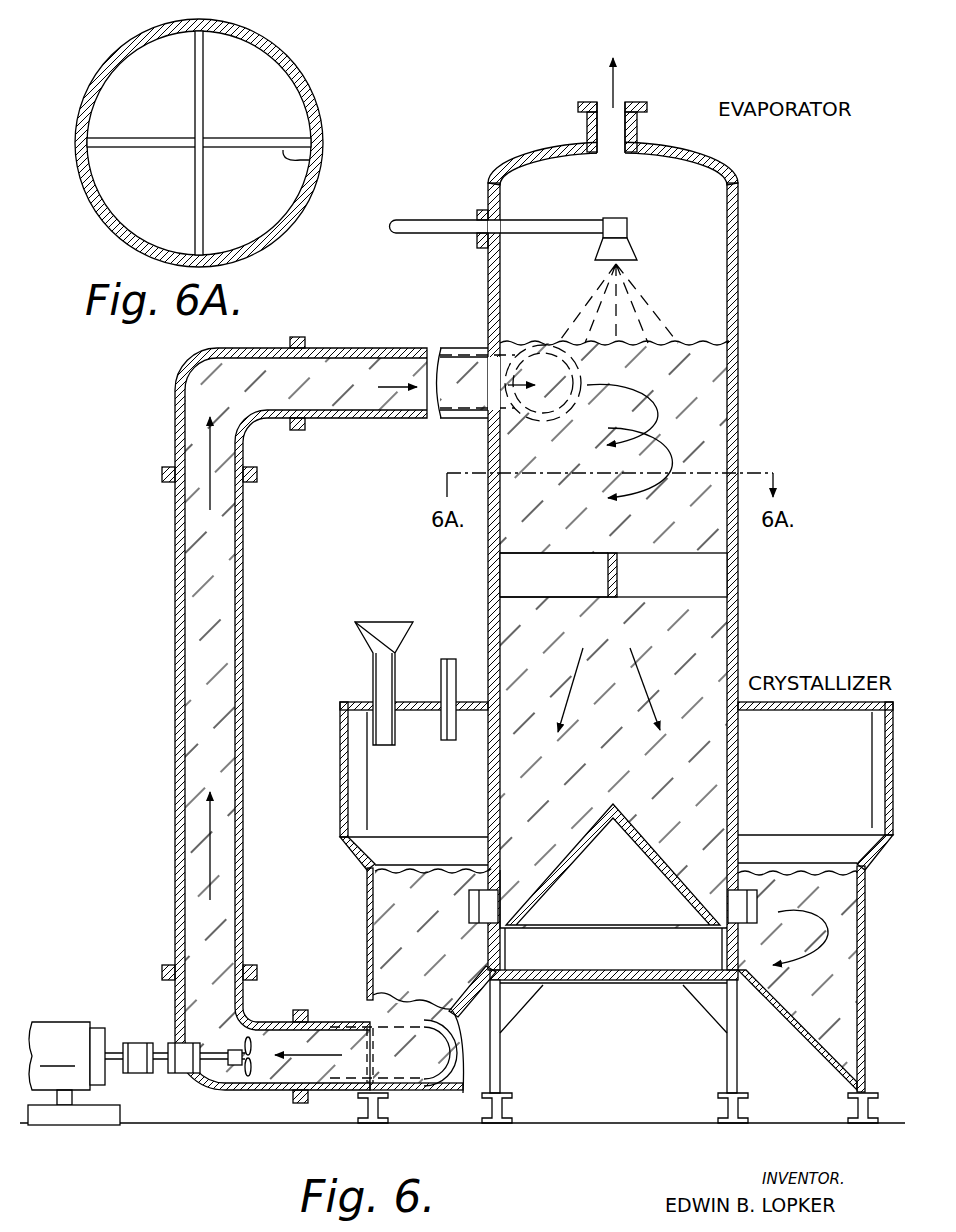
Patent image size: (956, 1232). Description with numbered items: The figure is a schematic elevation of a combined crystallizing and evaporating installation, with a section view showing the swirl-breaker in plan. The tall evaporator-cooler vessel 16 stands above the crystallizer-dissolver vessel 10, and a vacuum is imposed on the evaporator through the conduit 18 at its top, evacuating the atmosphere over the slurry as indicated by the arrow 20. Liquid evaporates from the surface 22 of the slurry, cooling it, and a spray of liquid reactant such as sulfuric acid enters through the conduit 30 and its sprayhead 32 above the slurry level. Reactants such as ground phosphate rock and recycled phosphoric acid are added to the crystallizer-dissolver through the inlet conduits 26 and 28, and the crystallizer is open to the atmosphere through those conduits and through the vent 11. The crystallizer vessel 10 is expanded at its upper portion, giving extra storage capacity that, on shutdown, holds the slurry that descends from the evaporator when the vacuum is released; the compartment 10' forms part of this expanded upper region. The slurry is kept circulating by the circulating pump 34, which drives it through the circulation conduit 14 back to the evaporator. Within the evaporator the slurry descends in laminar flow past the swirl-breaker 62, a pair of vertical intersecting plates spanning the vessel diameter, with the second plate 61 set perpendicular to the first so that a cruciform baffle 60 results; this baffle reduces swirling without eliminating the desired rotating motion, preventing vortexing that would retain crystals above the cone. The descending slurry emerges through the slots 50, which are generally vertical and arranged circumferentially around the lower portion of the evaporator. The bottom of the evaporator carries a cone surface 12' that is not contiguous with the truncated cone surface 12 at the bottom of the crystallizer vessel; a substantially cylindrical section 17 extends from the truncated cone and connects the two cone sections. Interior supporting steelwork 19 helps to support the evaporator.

In FIG. 6A, the crystallizer-dissolver vessel 10 is at (220, 143).
In FIG. 6, the crystallizer-dissolver vessel 10 is at (608, 978).
In FIG. 6, the feed compartment 10' is at (388, 786).
In FIG. 6, the vent 11 is at (826, 711).
In FIG. 6, the cone surface 12 is at (410, 1047).
In FIG. 6, the cone surface 12' is at (613, 864).
In FIG. 6, the circulation conduit 14 is at (386, 348).
In FIG. 6, the evaporator-cooler vessel 16 is at (740, 312).
In FIG. 6, the cylindrical section 17 is at (487, 953).
In FIG. 6, the conduit 18 is at (586, 128).
In FIG. 6, the interior supporting steelwork 19 is at (500, 1047).
In FIG. 6, the arrow 20 is at (613, 70).
In FIG. 6, the slurry surface 22 is at (548, 346).
In FIG. 6, the inlet conduit 26 is at (373, 672).
In FIG. 6, the inlet conduit 28 is at (457, 672).
In FIG. 6, the conduit 30 is at (440, 221).
In FIG. 6, the sprayhead 32 is at (628, 243).
In FIG. 6, the circulating pump 34 is at (53, 1022).
In FIG. 6, the slots 50 is at (500, 893).
In FIG. 6A, the baffle plate 60 is at (283, 150).
In FIG. 6, the baffle plate 60 is at (707, 578).
In FIG. 6A, the second plate 61 is at (205, 80).
In FIG. 6, the second plate 61 is at (619, 580).
In FIG. 6A, the swirl-breaker 62 is at (257, 123).
In FIG. 6, the swirl-breaker 62 is at (537, 588).